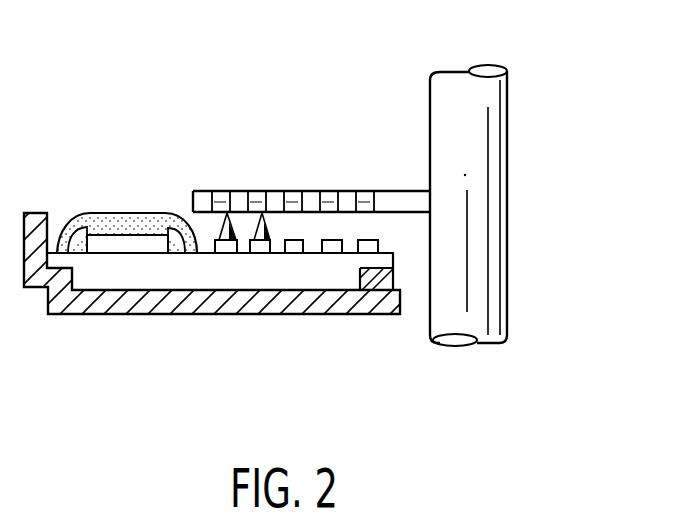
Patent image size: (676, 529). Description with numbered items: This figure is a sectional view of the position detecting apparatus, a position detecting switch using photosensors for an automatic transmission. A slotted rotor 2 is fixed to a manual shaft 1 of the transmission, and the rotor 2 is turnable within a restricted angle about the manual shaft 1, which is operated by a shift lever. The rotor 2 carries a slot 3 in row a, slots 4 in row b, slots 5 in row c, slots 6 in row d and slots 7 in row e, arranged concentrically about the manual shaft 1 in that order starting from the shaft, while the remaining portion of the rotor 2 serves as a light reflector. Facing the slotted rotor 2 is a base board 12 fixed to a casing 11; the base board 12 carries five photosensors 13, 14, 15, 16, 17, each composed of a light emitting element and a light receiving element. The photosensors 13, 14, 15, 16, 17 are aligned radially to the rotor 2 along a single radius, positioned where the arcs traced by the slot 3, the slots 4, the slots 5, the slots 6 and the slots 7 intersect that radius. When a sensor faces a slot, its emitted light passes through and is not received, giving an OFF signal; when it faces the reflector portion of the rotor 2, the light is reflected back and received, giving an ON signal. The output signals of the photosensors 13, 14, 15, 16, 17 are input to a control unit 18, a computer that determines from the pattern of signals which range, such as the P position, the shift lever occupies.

The manual shaft 1 is at (453, 88).
The slotted rotor 2 is at (190, 130).
The slot 3 is at (367, 190).
The slots 4 is at (330, 190).
The slots 5 is at (293, 190).
The slots 6 is at (260, 190).
The slots 7 is at (222, 190).
The casing 11 is at (192, 303).
The base board 12 is at (118, 258).
The photosensor 13 is at (367, 253).
The photosensor 14 is at (332, 253).
The photosensor 15 is at (295, 253).
The photosensor 16 is at (262, 253).
The photosensor 17 is at (225, 253).
The control unit 18 is at (135, 243).